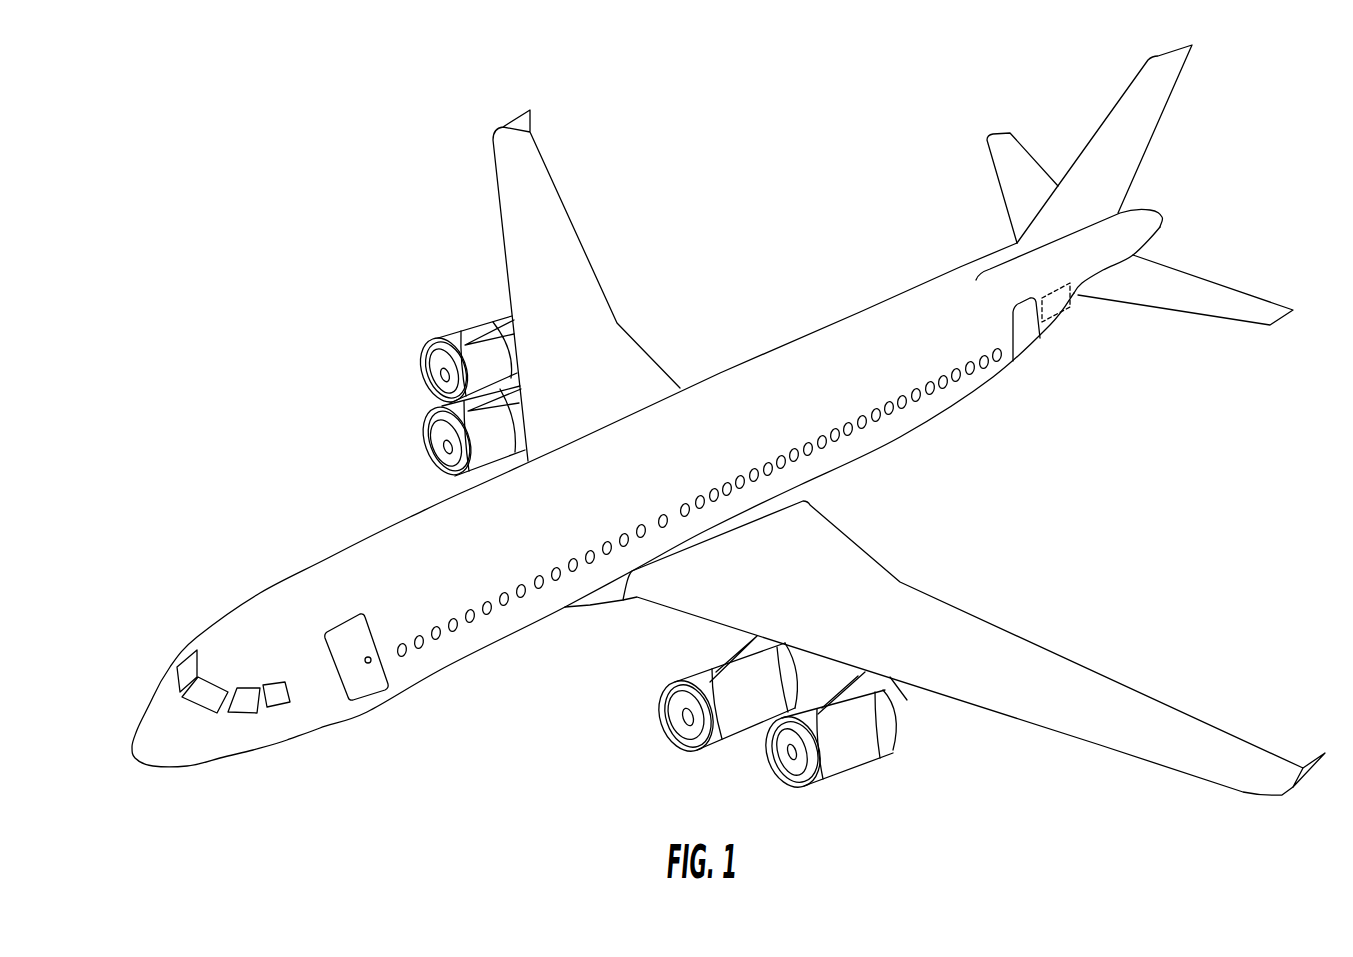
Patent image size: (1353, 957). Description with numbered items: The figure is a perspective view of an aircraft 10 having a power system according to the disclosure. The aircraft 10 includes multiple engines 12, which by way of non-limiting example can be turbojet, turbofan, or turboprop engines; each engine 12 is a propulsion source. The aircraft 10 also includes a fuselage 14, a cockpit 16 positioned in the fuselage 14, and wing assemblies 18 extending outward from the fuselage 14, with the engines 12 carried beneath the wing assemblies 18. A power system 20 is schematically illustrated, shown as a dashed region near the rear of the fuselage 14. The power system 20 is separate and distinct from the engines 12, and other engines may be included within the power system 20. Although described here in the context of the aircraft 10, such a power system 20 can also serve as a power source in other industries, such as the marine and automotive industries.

The aircraft 10 is at (140, 588).
The engine 12 is at (725, 727).
The fuselage 14 is at (747, 360).
The cockpit 16 is at (275, 680).
The wing assembly 18 is at (517, 170).
The power system 20 is at (1060, 306).